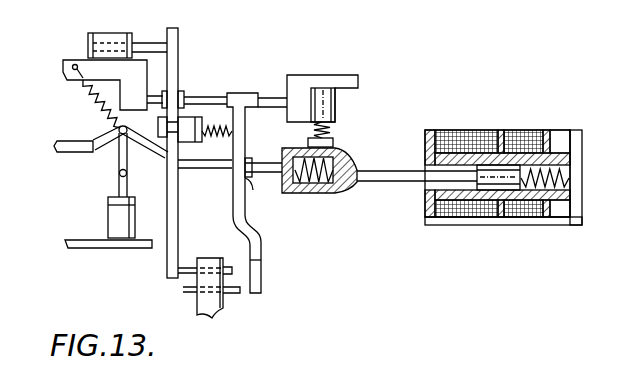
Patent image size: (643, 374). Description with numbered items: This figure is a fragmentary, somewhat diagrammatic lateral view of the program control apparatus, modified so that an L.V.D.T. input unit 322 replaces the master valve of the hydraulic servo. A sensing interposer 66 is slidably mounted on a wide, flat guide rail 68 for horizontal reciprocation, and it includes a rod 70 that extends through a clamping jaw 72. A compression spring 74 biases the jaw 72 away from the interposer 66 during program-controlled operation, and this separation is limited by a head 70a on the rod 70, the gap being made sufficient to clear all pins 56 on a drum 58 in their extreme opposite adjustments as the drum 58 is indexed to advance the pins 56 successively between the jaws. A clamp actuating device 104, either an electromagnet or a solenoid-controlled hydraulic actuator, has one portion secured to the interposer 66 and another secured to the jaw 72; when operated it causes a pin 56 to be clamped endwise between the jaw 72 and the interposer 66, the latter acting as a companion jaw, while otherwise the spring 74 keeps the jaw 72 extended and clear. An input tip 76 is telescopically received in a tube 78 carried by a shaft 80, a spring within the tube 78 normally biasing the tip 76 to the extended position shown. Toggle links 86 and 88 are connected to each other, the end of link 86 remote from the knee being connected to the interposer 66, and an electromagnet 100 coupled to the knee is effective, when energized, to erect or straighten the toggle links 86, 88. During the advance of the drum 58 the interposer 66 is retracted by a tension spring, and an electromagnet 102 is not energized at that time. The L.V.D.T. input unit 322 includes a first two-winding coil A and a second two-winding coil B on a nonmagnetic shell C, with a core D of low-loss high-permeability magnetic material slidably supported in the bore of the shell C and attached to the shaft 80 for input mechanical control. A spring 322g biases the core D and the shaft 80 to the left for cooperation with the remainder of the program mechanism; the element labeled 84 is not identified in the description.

The pin 56 is at (188, 270).
The drum 58 is at (220, 257).
The sensing interposer 66 is at (167, 257).
The guide rail 68 is at (268, 97).
The rod 70 is at (220, 172).
The head 70a is at (250, 190).
The clamping jaw 72 is at (261, 262).
The compression spring 74 is at (212, 160).
The input tip 76 is at (268, 162).
The tube 78 is at (296, 193).
The shaft 80 is at (390, 171).
The piston 84 is at (336, 105).
The toggle link 86 is at (150, 144).
The toggle link 88 is at (106, 143).
The electromagnet 100 is at (118, 212).
The electromagnet 102 is at (110, 33).
The clamp actuating device 104 is at (188, 118).
The L.V.D.T. input unit 322 is at (531, 171).
The spring 322g is at (563, 178).
The first two-winding coil A is at (476, 150).
The second two-winding coil B is at (540, 138).
The nonmagnetic shell C is at (556, 142).
The core D is at (503, 178).